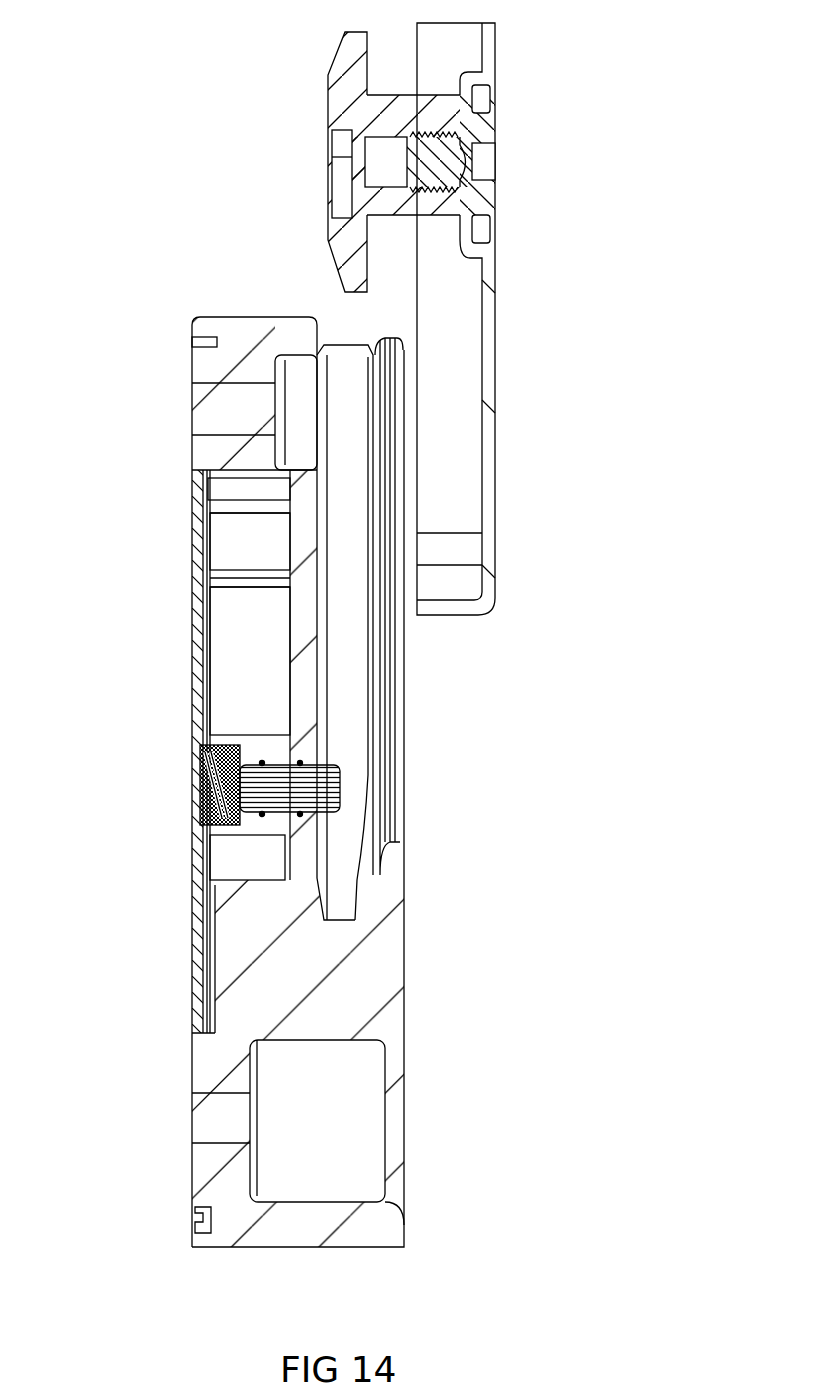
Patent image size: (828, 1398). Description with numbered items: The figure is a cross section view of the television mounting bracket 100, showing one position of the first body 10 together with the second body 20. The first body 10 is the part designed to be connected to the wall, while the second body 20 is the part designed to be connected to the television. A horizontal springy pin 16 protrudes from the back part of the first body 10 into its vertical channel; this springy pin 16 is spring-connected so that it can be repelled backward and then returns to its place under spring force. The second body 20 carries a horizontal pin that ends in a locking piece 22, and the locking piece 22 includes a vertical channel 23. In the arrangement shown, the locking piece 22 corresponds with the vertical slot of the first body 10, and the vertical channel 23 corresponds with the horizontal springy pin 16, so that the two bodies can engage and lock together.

The television mounting bracket 100 is at (588, 137).
The first body 10 is at (222, 412).
The horizontal springy pin 16 is at (305, 793).
The second body 20 is at (443, 330).
The locking piece 22 is at (337, 85).
The vertical channel 23 is at (340, 200).